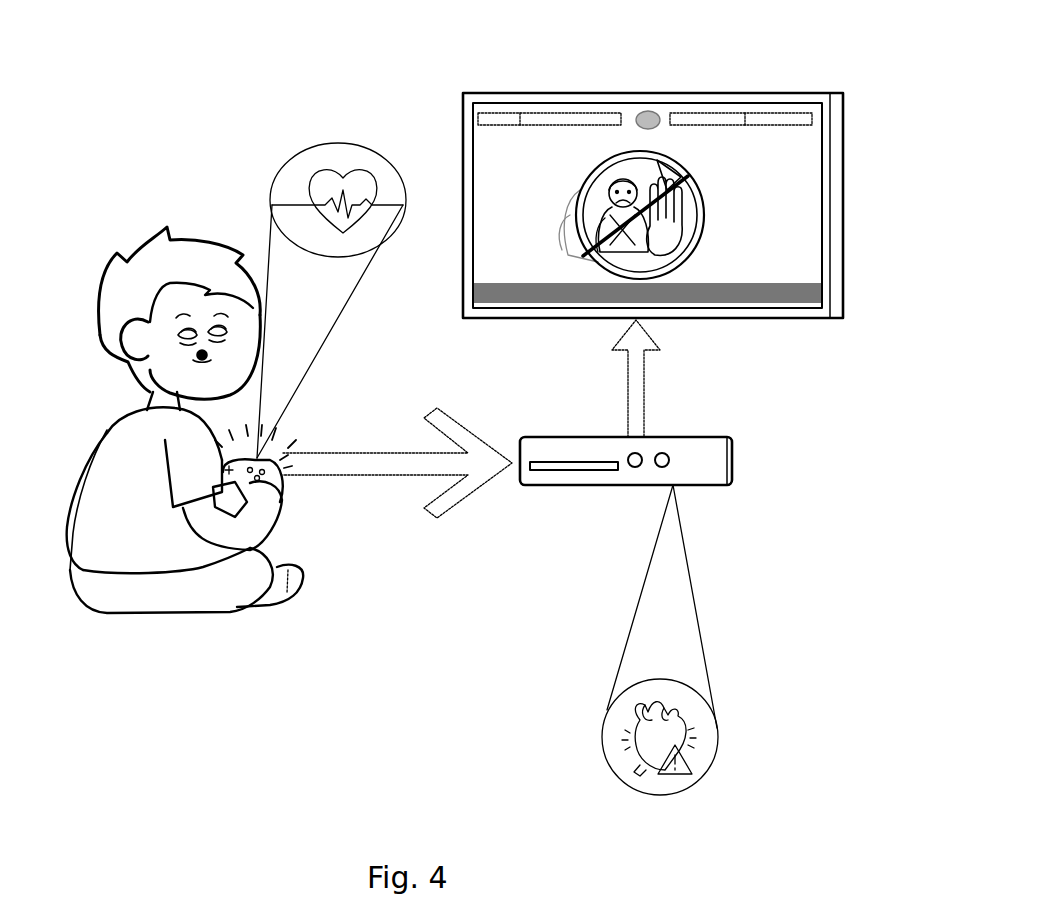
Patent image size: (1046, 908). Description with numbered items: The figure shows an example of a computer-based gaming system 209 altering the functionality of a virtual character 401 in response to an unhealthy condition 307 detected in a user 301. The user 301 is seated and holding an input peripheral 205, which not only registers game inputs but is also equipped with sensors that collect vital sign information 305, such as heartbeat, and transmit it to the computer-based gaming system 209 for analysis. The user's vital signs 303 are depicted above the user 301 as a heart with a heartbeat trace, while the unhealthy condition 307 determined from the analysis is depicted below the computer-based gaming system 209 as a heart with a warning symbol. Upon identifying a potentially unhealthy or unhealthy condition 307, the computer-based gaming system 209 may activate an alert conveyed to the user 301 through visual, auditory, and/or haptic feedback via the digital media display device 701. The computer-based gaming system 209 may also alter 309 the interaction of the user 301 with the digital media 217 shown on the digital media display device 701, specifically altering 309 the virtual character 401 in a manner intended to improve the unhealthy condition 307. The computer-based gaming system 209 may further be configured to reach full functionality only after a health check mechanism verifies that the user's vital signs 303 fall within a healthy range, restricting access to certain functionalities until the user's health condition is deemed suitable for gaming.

The digital media display device 701 is at (622, 75).
The digital media 217 is at (768, 210).
The virtual character 401 is at (573, 190).
The altering 309 is at (703, 223).
The computer-based gaming system 209 is at (565, 485).
The vital signs 303 is at (353, 145).
The unhealthy condition 307 is at (718, 737).
The user 301 is at (107, 343).
The input peripheral 205 is at (233, 500).
The vital sign information 305 is at (272, 456).